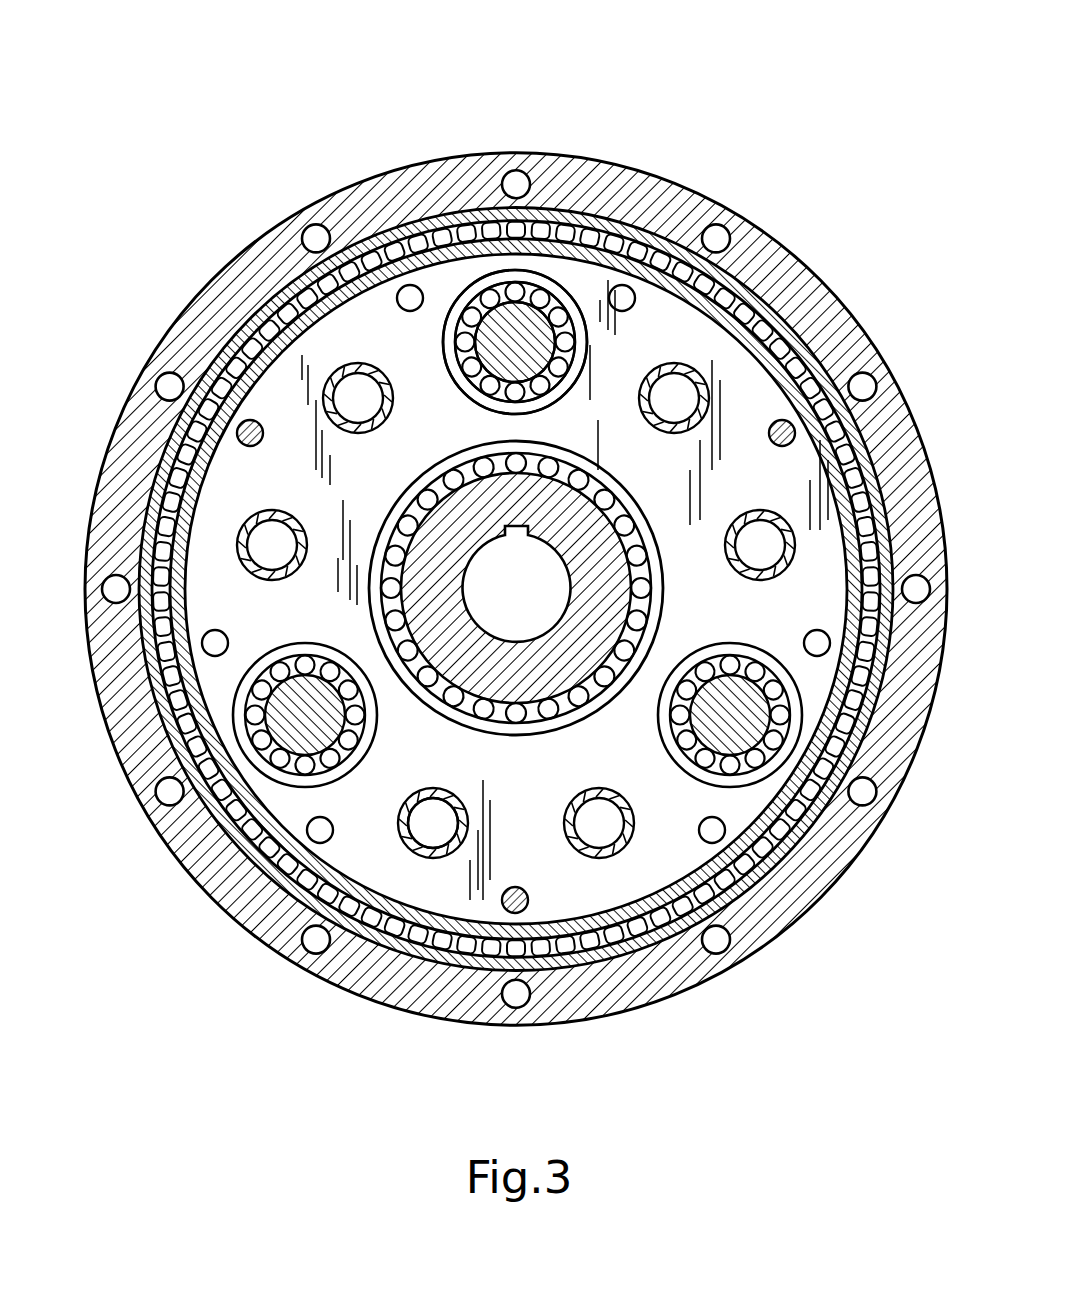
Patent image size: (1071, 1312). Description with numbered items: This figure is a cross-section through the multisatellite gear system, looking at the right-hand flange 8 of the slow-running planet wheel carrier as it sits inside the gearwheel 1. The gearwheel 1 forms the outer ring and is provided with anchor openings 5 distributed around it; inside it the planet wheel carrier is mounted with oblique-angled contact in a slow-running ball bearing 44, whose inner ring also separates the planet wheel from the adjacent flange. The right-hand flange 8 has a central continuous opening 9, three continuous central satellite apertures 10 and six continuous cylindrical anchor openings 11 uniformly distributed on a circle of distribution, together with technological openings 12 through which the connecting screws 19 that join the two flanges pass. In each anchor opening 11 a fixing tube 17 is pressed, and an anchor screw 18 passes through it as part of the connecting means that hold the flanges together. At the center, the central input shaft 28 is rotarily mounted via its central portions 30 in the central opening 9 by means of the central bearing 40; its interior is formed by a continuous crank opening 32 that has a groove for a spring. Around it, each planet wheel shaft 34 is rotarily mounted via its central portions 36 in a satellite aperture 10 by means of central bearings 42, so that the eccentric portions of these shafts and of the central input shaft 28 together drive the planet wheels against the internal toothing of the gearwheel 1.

The gearwheel 1 is at (718, 193).
The anchor openings 5 is at (863, 385).
The right-hand flange 8 is at (710, 347).
The central continuous opening 9 is at (558, 600).
The continuous central satellite apertures 10 is at (444, 336).
The continuous cylindrical anchor openings 11 is at (400, 838).
The technological openings 12 is at (215, 645).
The fixing tube 17 is at (415, 857).
The anchor screw 18 is at (435, 832).
The connecting screws 19 is at (172, 445).
The central input shaft 28 is at (553, 785).
The central portions 30 is at (485, 680).
The continuous crank opening 32 is at (505, 737).
The planet wheel shaft 34 is at (515, 211).
The central portions 36 is at (478, 305).
The central bearing 40 is at (220, 818).
The central bearings 42 is at (547, 300).
The slow-running ball bearing 44 is at (250, 345).